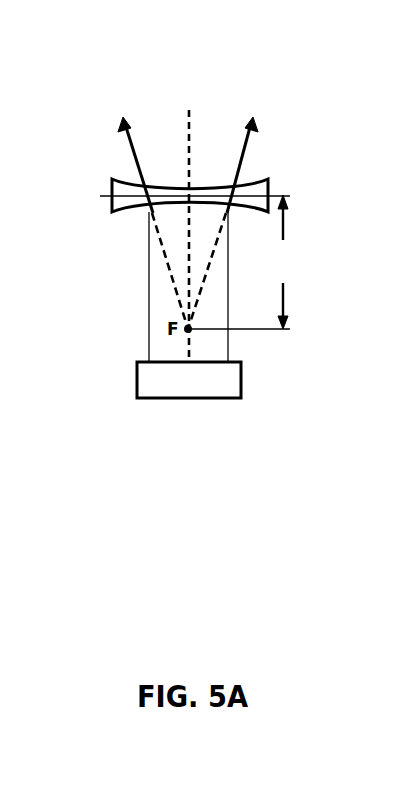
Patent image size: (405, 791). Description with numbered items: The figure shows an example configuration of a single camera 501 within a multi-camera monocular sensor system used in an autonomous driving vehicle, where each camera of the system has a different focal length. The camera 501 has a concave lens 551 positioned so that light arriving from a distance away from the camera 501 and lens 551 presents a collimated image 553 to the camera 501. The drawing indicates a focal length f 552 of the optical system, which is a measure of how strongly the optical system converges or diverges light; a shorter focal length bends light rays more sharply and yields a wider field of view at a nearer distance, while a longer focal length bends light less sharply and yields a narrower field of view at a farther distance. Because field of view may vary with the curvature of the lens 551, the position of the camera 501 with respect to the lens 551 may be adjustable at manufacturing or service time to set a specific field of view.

The camera 501 is at (172, 390).
The concave lens 551 is at (268, 181).
The focal length f 552 is at (302, 262).
The collimated image 553 is at (228, 352).